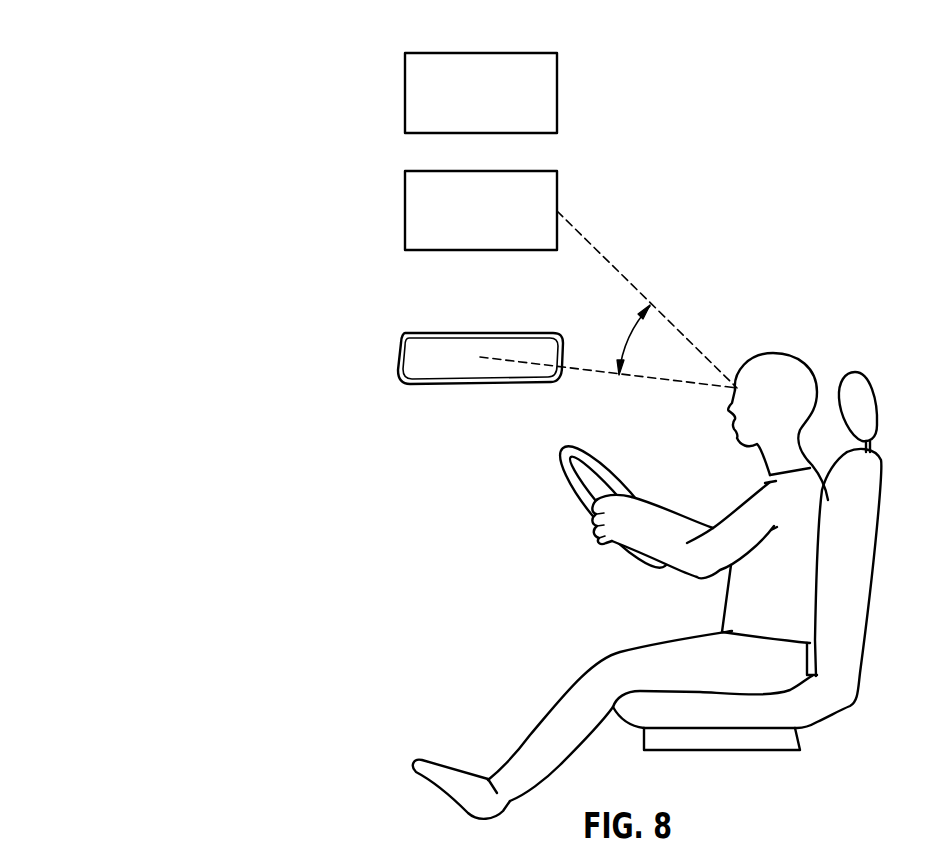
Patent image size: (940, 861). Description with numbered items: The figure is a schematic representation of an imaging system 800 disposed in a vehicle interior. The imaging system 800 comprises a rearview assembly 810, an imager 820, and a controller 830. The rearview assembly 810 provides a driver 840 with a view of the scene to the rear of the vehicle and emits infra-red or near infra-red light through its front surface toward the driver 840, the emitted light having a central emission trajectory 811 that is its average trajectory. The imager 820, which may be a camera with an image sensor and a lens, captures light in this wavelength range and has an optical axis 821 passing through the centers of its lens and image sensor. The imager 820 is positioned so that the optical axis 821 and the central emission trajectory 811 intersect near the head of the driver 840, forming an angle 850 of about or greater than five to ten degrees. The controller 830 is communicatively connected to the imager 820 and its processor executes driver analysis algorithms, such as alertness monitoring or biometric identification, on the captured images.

The imaging system 800 is at (193, 57).
The rearview assembly 810 is at (410, 334).
The central emission trajectory 811 is at (578, 371).
The imager 820 is at (420, 171).
The optical axis 821 is at (596, 247).
The controller 830 is at (420, 53).
The driver 840 is at (800, 358).
The angle 850 is at (617, 340).